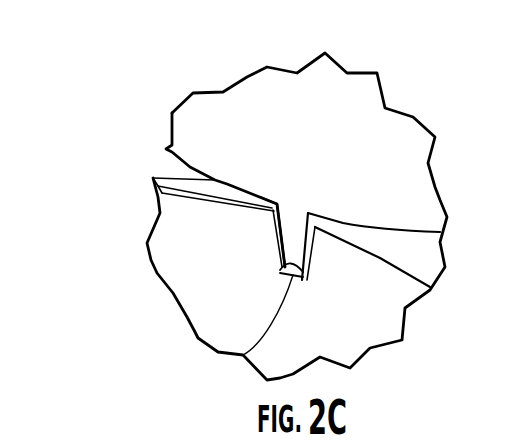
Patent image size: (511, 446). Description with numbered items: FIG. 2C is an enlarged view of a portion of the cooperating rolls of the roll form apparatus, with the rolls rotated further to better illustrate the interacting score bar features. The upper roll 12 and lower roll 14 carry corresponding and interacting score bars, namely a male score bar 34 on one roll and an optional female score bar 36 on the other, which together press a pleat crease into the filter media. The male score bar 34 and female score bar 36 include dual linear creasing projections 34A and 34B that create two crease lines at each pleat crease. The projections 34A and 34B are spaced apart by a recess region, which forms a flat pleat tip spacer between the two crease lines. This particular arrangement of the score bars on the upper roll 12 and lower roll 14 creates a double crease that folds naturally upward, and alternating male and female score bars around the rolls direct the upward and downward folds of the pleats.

The upper roll 12 is at (183, 120).
The lower roll 14 is at (182, 228).
The male score bar 34 is at (293, 230).
The first linear creasing projection 34A is at (283, 270).
The second linear creasing projection 34B is at (300, 277).
The female score bar 36 is at (240, 355).